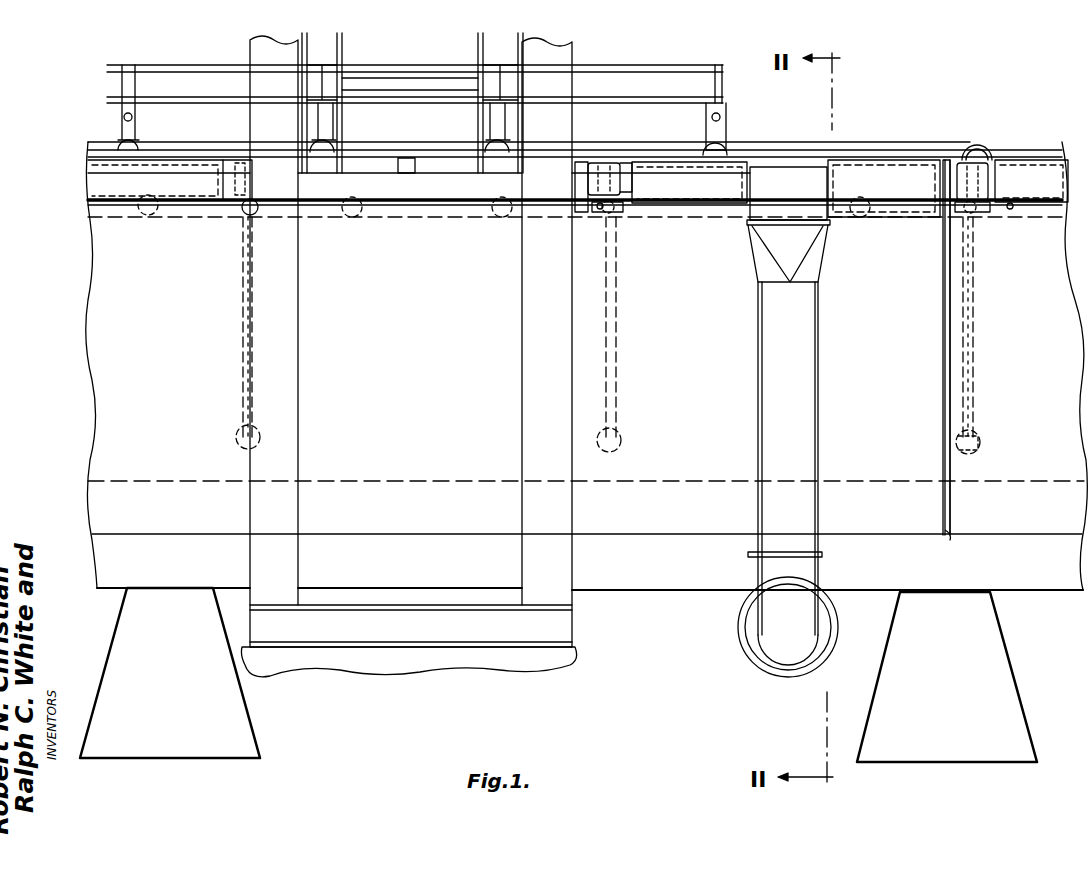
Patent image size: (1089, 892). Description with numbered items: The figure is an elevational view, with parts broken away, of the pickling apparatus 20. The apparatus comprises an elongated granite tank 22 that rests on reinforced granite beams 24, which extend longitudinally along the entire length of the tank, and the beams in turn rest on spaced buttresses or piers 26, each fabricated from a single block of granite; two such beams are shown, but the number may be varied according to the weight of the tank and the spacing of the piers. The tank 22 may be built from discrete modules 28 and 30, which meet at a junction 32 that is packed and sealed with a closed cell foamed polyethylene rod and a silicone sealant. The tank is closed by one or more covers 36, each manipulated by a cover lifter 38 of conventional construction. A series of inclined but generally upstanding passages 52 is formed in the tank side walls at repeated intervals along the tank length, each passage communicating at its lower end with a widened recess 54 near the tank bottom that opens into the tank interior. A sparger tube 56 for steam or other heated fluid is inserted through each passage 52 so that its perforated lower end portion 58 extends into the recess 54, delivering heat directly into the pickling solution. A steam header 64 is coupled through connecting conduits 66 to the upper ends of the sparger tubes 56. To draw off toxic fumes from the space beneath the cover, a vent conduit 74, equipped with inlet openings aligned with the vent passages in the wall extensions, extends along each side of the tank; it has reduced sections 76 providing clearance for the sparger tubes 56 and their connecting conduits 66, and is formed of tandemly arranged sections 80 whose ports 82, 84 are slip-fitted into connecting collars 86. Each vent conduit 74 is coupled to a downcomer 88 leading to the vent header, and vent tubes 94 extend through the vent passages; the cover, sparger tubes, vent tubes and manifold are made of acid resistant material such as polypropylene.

The pickling apparatus 20 is at (954, 128).
The granite tank 22 is at (665, 525).
The reinforced granite beams 24 is at (624, 592).
The piers 26 is at (238, 721).
The module 28 is at (887, 522).
The module 30 is at (1043, 522).
The junction 32 is at (954, 536).
The cover 36 is at (985, 148).
The cover lifter 38 is at (560, 52).
The inclined passages 52 is at (245, 278).
The widened recess 54 is at (236, 437).
The sparger tube 56 is at (243, 313).
The lower end portion 58 is at (982, 448).
The steam header 64 is at (600, 215).
The connecting conduits 66 is at (606, 216).
The vent conduit 74 is at (900, 160).
The reduced sections 76 is at (597, 212).
The tandemly arranged sections 80 is at (843, 165).
The port 82 is at (626, 164).
The port 84 is at (584, 164).
The connecting collars 86 is at (626, 210).
The downcomer 88 is at (805, 307).
The vent tubes 94 is at (860, 218).